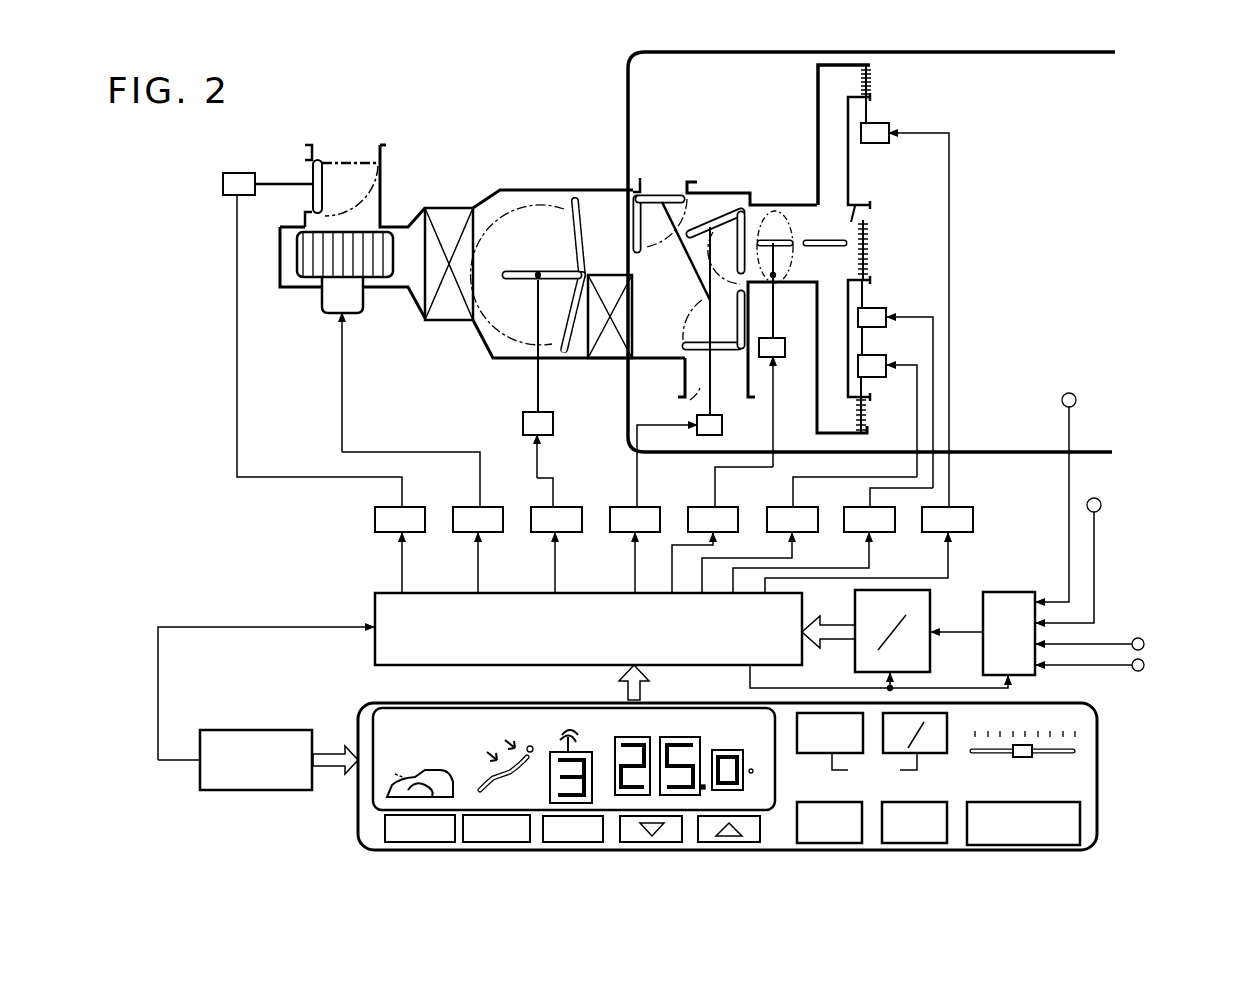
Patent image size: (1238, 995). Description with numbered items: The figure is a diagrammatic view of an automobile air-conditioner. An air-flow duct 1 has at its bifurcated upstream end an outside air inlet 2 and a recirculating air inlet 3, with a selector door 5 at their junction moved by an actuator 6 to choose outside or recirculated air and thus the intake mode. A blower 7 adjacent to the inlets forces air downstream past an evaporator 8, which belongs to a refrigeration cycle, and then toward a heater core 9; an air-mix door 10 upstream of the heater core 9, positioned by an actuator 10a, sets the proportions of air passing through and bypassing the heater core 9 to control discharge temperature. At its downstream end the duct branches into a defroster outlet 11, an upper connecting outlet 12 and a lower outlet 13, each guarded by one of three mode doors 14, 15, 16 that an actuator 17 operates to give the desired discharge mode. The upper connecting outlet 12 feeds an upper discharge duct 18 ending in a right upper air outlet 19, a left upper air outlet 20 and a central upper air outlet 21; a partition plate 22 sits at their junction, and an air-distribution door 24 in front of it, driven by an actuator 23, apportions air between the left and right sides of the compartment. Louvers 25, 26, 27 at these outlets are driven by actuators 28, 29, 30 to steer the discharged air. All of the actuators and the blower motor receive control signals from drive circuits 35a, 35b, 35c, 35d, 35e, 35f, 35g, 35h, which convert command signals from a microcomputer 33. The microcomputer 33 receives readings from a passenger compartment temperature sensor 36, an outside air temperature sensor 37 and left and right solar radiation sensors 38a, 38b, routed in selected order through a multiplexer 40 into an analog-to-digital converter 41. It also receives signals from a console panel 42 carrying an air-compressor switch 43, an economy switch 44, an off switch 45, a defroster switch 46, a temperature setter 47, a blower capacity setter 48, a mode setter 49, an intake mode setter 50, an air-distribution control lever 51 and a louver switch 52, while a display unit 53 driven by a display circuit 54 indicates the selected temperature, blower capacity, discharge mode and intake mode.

The air-flow duct 1 is at (508, 190).
The outside air inlet 2 is at (345, 160).
The recirculating air inlet 3 is at (313, 166).
The selector door 5 is at (313, 206).
The actuator 6 is at (223, 185).
The blower 7 is at (300, 252).
The evaporator 8 is at (450, 324).
The heater core 9 is at (610, 361).
The air-mix door 10 is at (541, 196).
The actuator 10a is at (523, 424).
The defroster outlet 11 is at (645, 186).
The upper connecting outlet 12 is at (760, 210).
The lower outlet 13 is at (688, 396).
The mode door 14 is at (670, 195).
The mode door 15 is at (720, 212).
The mode door 16 is at (682, 372).
The actuator 17 is at (722, 425).
The upper discharge duct 18 is at (800, 205).
The right upper air outlet 19 is at (845, 79).
The left upper air outlet 20 is at (817, 416).
The central upper air outlet 21 is at (853, 210).
The partition plate 22 is at (832, 240).
The actuator 23 is at (785, 350).
The air-distribution door 24 is at (807, 357).
The louver 25 is at (872, 80).
The louver 26 is at (866, 418).
The louver 27 is at (868, 243).
The actuator 28 is at (887, 124).
The actuator 29 is at (880, 358).
The actuator 30 is at (877, 311).
The microcomputer 33 is at (375, 598).
The drive circuit 35a is at (424, 508).
The drive circuit 35b is at (578, 508).
The drive circuit 35c is at (657, 508).
The drive circuit 35d is at (737, 508).
The drive circuit 35e is at (808, 531).
The drive circuit 35f is at (887, 531).
The drive circuit 35g is at (971, 508).
The drive circuit 35h is at (501, 508).
The passenger compartment temperature sensor 36 is at (1069, 393).
The outside air temperature sensor 37 is at (1094, 498).
The left solar radiation sensor 38a is at (1145, 643).
The right solar radiation sensor 38b is at (1145, 666).
The multiplexer 40 is at (1010, 592).
The analog-to-digital converter 41 is at (930, 616).
The console panel 42 is at (777, 840).
The air-compressor switch 43 is at (940, 754).
The economy switch 44 is at (810, 754).
The off switch 45 is at (927, 843).
The defroster switch 46 is at (850, 843).
The temperature setter 47 is at (692, 832).
The blower capacity setter 48 is at (575, 843).
The mode setter 49 is at (500, 843).
The intake mode setter 50 is at (420, 843).
The air-distribution control lever 51 is at (1030, 757).
The louver switch 52 is at (1028, 845).
The display unit 53 is at (537, 755).
The display circuit 54 is at (245, 790).